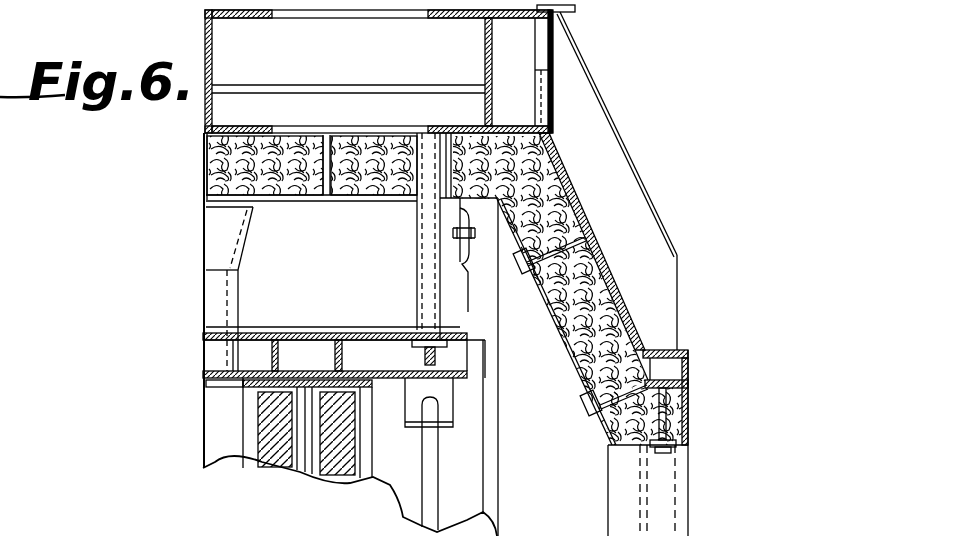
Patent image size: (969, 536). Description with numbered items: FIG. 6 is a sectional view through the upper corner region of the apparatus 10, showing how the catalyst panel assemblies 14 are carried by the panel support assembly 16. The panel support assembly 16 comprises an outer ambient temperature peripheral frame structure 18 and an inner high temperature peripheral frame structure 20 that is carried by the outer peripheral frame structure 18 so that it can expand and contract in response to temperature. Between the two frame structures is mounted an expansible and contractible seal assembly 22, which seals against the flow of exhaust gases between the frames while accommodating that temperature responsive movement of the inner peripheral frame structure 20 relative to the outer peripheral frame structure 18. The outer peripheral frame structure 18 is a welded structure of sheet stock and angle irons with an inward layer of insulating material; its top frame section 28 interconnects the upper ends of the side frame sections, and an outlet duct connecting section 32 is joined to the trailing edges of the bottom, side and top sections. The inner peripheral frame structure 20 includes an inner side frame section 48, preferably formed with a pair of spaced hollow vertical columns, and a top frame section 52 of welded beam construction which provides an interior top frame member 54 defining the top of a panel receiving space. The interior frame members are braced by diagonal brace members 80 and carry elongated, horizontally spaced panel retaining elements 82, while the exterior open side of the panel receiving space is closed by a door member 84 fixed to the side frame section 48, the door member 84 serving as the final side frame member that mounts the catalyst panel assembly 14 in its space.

The apparatus 10 is at (636, 86).
The catalyst panel assembly 14 is at (320, 364).
The panel support assembly 16 is at (650, 180).
The outer ambient temperature peripheral frame structure 18 is at (200, 127).
The inner high temperature peripheral frame structure 20 is at (199, 330).
The expansible and contractible seal assembly 22 is at (479, 284).
The top frame section 28 is at (203, 35).
The outlet duct connecting section 32 is at (689, 429).
The inner side frame section 48 is at (467, 487).
The top frame section 52 is at (403, 303).
The interior top frame member 54 is at (218, 386).
The diagonal brace member 80 is at (430, 448).
The panel retaining element 82 is at (257, 408).
The door member 84 is at (223, 458).